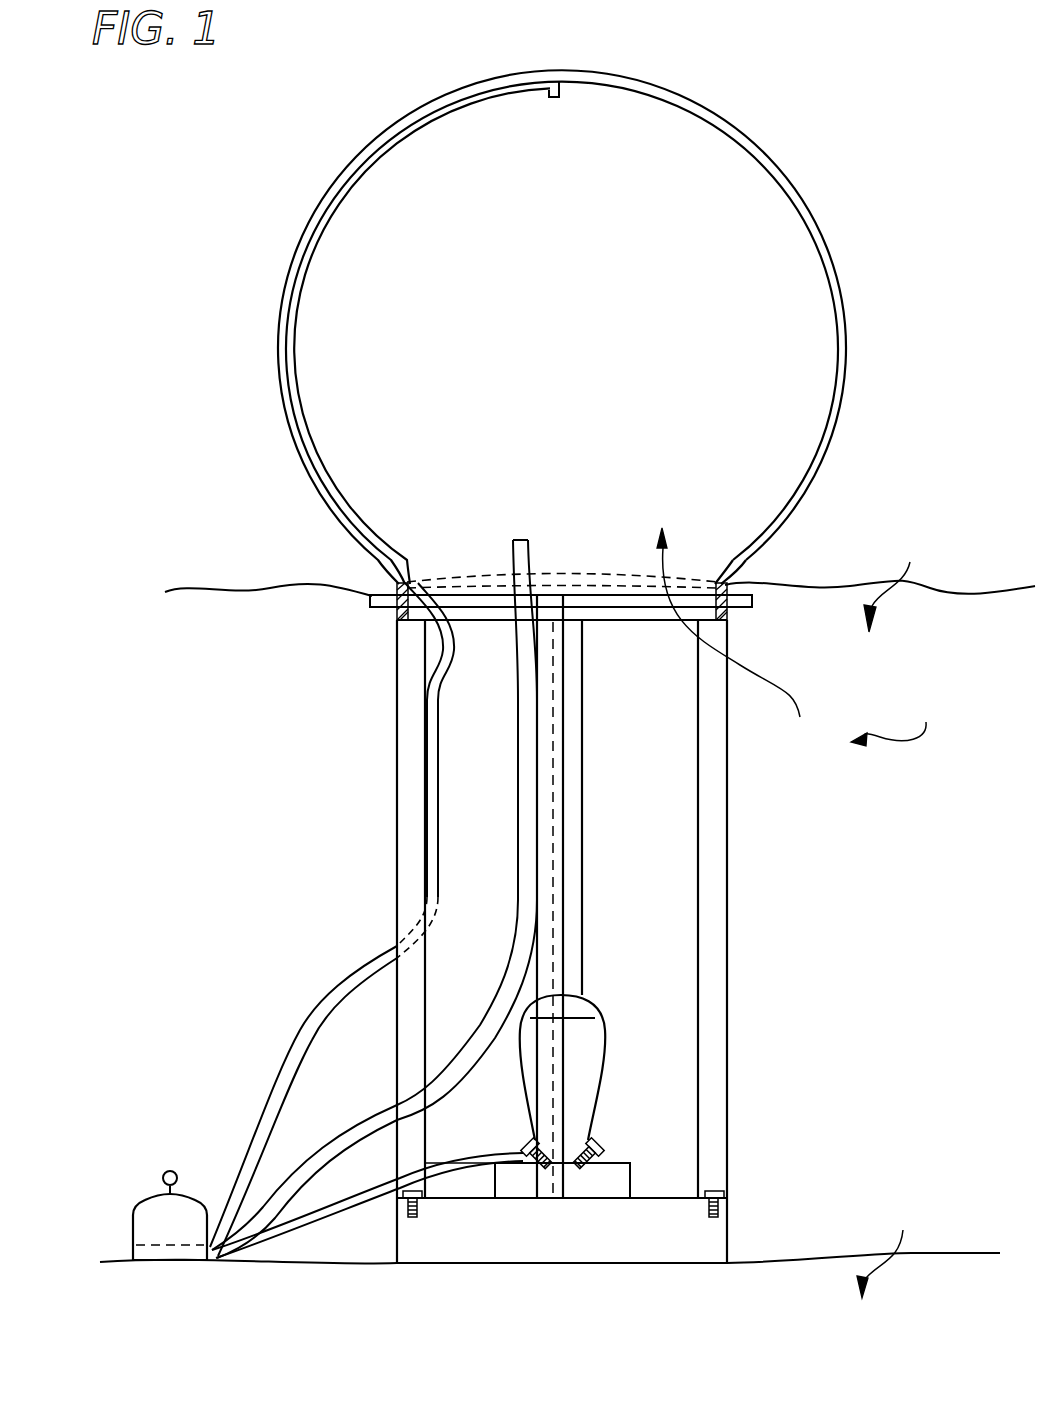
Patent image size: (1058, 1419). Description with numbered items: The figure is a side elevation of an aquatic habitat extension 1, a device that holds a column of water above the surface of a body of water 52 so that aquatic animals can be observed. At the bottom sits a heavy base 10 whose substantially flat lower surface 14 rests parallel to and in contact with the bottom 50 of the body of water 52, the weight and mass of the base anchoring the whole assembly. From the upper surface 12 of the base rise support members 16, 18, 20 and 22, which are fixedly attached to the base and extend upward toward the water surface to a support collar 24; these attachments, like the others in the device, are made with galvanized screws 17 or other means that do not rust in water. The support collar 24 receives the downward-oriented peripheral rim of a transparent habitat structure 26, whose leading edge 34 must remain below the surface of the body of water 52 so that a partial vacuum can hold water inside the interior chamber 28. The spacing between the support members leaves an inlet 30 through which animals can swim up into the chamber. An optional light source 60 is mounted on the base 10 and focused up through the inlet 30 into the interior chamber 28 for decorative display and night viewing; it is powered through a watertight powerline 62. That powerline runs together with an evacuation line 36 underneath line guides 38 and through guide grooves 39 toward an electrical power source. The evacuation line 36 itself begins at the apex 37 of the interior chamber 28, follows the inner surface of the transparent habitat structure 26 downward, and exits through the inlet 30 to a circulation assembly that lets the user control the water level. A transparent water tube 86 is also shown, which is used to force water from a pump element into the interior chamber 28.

The aquatic habitat extension 1 is at (893, 720).
The base 10 is at (727, 1243).
The upper surface 12 is at (683, 1196).
The lower surface 14 is at (684, 1266).
The support member 16 is at (397, 682).
The galvanized screws 17 is at (603, 1145).
The support member 18 is at (582, 720).
The support member 20 is at (727, 782).
The support member 22 is at (541, 777).
The support collar 24 is at (372, 607).
The transparent habitat structure 26 is at (700, 100).
The interior chamber 28 is at (790, 392).
The inlet 30 is at (736, 642).
The leading edge 34 is at (728, 630).
The evacuation line 36 is at (412, 130).
The apex 37 is at (554, 88).
The line guides 38 is at (143, 1203).
The guide grooves 39 is at (173, 1257).
The bottom 50 is at (888, 1248).
The body of water 52 is at (895, 584).
The light source 60 is at (608, 998).
The watertight powerline 62 is at (373, 1188).
The transparent water tube 86 is at (518, 830).